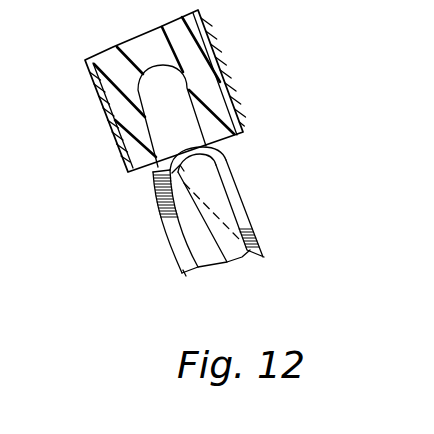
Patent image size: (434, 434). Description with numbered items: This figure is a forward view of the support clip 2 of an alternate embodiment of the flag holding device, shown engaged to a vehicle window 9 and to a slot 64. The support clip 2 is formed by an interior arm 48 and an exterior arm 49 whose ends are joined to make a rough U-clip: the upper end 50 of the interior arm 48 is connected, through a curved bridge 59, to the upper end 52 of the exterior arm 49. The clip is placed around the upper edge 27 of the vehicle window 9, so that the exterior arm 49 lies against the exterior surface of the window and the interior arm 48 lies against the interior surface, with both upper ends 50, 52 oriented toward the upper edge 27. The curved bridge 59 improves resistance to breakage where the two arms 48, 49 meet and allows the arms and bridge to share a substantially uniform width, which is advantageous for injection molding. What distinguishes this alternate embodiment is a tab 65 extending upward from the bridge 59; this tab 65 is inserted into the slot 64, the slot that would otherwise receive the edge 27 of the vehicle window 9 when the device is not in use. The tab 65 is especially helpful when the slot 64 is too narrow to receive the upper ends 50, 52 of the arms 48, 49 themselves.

The slot 64 is at (192, 68).
The tab 65 is at (174, 108).
The bridge 59 is at (186, 148).
The upper end of exterior arm 52 is at (198, 227).
The exterior arm 49 is at (252, 238).
The vehicle window 9 is at (228, 248).
The support clip 2 is at (181, 273).
The interior arm 48 is at (176, 243).
The upper end of interior arm 50 is at (158, 192).
The upper edge of vehicle window 27 is at (153, 177).